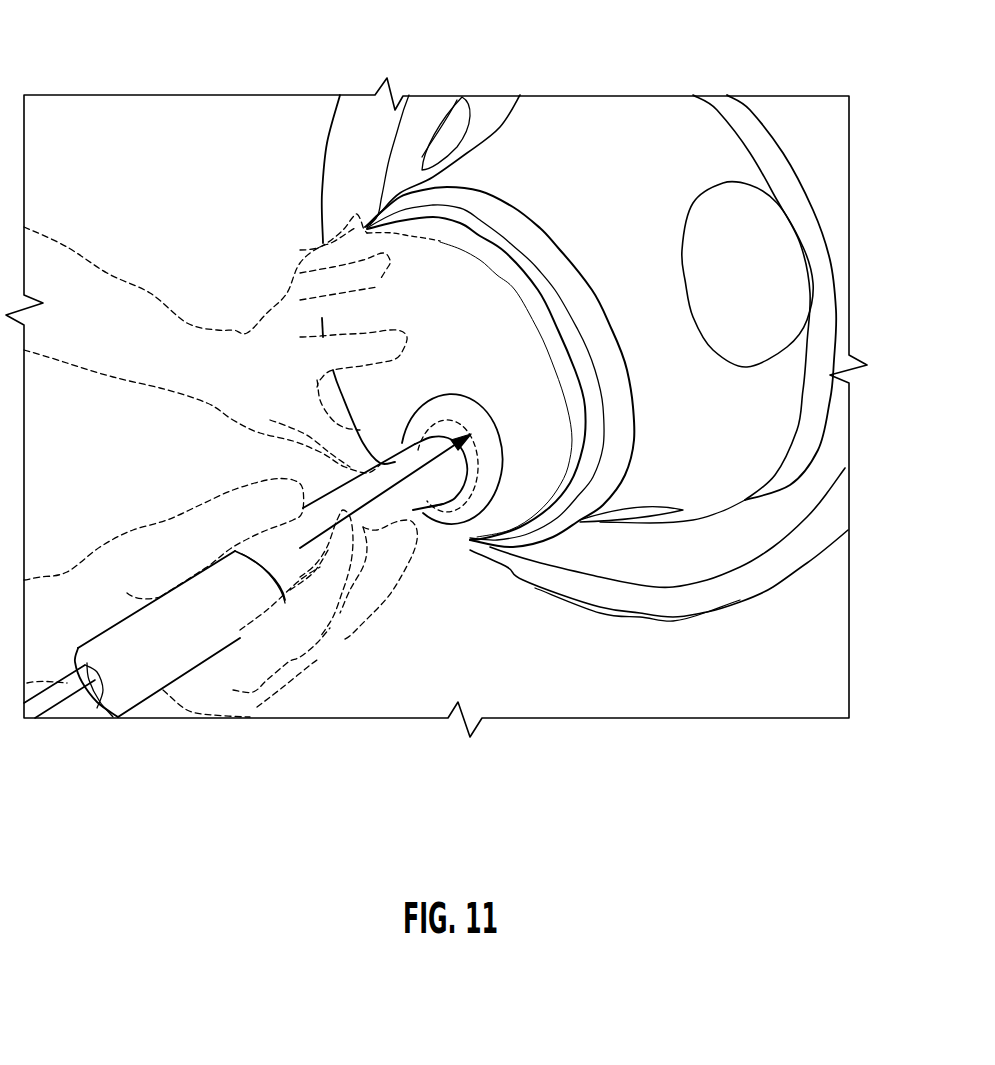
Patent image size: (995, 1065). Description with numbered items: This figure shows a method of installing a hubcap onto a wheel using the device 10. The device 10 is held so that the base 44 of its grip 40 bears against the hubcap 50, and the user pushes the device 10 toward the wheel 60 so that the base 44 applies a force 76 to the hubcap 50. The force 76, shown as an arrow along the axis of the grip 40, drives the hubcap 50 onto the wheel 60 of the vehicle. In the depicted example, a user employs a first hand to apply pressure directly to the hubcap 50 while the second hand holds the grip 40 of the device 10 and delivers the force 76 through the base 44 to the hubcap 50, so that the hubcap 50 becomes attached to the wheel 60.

The device 10 is at (63, 693).
The grip 40 is at (413, 510).
The base 44 is at (477, 495).
The hubcap 50 is at (437, 290).
The wheel 60 is at (777, 423).
The force 76 is at (342, 520).